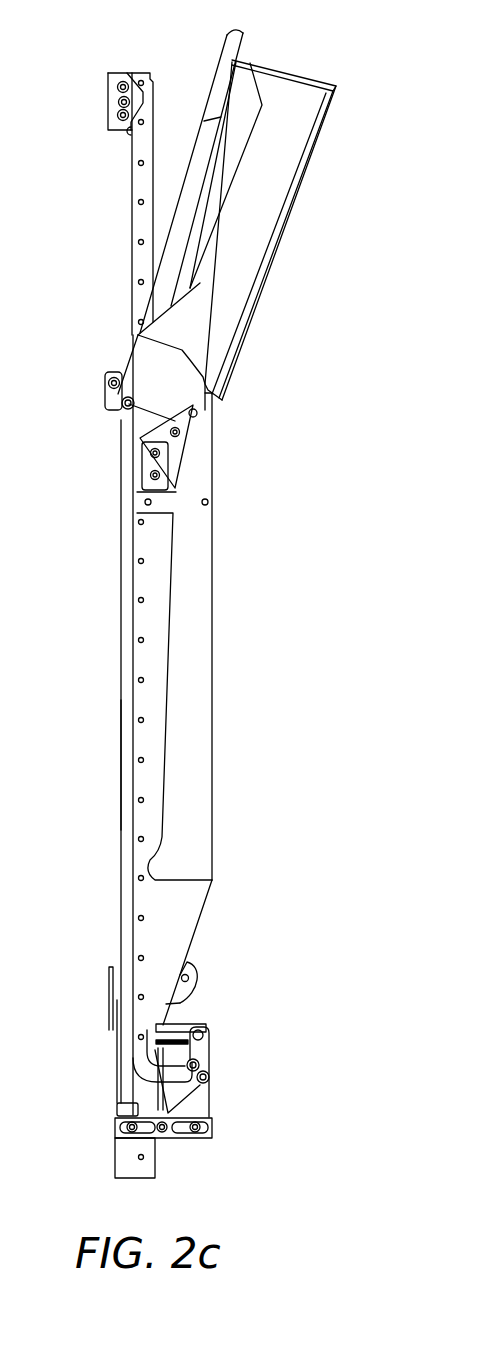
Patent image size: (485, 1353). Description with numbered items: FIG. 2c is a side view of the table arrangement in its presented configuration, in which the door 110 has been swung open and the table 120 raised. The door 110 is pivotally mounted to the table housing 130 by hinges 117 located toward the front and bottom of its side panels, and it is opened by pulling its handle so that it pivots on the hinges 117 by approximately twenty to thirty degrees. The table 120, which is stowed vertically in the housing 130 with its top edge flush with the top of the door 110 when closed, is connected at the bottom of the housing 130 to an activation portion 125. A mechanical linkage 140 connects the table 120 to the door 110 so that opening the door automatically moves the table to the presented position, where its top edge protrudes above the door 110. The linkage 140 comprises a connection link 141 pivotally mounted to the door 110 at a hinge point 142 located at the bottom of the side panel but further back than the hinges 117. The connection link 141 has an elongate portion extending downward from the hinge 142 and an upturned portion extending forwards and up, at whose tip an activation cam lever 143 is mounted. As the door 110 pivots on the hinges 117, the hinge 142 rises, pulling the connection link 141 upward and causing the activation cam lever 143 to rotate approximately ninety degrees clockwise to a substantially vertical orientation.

The door 110 is at (280, 184).
The hinge 117 is at (199, 410).
The table 120 is at (225, 42).
The activation portion 125 is at (186, 1027).
The table housing 130 is at (138, 148).
The mechanical linkage 140 is at (112, 597).
The connection link 141 is at (125, 762).
The hinge point 142 is at (121, 403).
The activation cam lever 143 is at (205, 1047).